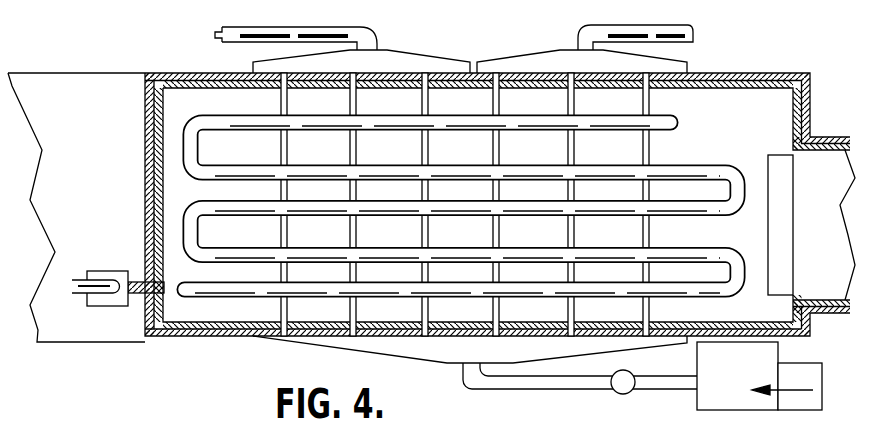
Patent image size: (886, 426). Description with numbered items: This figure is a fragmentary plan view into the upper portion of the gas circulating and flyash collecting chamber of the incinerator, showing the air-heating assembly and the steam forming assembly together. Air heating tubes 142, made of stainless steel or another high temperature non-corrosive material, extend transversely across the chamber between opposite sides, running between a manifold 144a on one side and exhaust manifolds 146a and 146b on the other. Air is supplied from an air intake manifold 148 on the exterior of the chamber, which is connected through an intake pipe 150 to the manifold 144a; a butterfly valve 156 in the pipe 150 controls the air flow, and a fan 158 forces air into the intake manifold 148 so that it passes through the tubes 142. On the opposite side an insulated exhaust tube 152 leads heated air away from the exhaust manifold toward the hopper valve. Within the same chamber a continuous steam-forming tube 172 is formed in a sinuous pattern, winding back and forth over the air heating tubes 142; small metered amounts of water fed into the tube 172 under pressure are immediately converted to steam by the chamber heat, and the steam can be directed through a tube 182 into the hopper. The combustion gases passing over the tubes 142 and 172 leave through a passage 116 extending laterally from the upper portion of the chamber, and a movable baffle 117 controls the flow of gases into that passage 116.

The passage 116 is at (830, 210).
The movable baffle 117 is at (773, 156).
The air heating tubes 142 is at (352, 150).
The manifold 144a is at (315, 340).
The exhaust manifold 146a is at (523, 60).
The exhaust manifold 146b is at (436, 42).
The air intake manifold 148 is at (744, 370).
The intake pipe 150 is at (520, 389).
The insulated exhaust tube 152 is at (230, 20).
The butterfly valve 156 is at (636, 377).
The fan 158 is at (824, 364).
The steam-forming tube 172 is at (713, 152).
The tube 182 is at (77, 282).